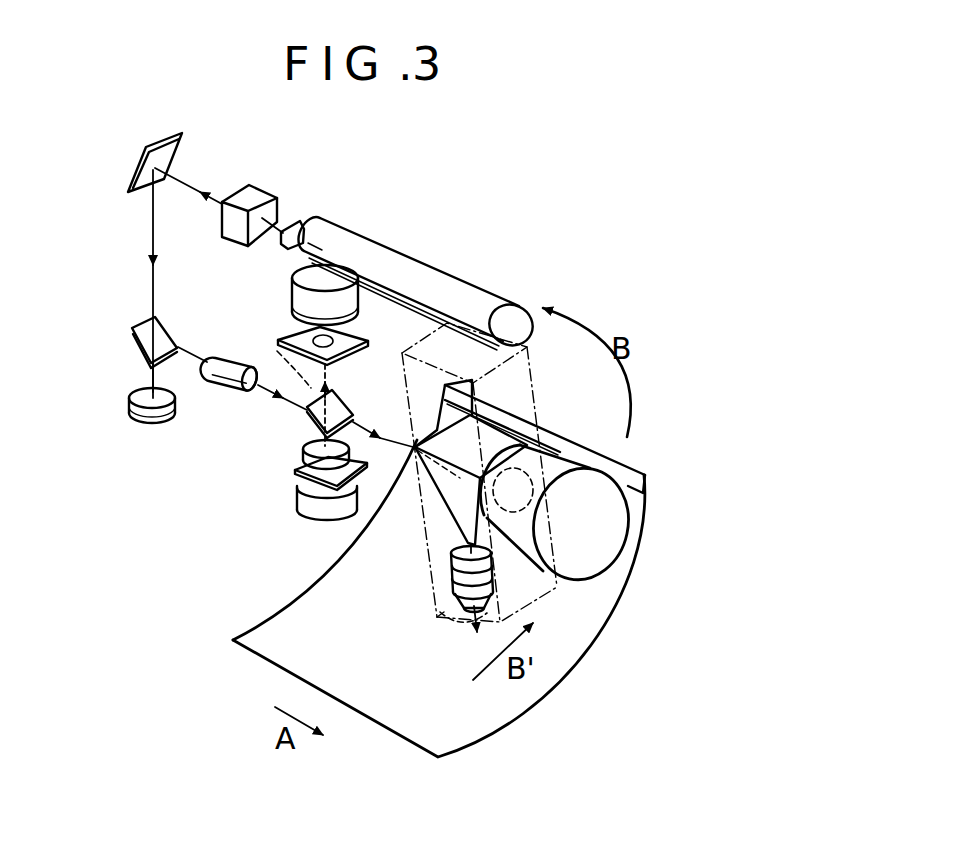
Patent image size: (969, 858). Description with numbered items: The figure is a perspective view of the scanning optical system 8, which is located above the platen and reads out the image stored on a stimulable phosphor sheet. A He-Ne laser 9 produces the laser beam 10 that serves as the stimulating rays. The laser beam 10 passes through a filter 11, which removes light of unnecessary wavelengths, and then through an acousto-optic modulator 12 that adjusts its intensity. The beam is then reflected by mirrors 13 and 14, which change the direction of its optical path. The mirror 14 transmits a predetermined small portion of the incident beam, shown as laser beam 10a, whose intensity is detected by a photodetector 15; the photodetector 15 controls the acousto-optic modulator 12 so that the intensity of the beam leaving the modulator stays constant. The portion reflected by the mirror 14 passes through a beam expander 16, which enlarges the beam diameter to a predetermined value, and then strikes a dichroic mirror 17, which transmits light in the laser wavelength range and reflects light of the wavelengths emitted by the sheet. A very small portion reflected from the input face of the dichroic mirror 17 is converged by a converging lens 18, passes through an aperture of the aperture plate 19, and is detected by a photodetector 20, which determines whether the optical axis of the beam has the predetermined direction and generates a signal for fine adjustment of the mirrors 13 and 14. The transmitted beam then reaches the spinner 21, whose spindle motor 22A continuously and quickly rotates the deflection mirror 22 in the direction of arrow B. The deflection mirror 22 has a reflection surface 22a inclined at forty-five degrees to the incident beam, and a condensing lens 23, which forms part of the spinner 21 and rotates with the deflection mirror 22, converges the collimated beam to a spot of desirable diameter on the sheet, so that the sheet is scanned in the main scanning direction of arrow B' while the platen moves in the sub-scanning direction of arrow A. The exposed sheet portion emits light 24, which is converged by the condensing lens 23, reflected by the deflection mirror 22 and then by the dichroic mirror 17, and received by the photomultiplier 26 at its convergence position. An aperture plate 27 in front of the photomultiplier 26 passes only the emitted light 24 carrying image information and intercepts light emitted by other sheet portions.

The scanning optical system 8 is at (563, 268).
The He-Ne laser 9 is at (455, 290).
The laser beam 10 is at (300, 220).
The laser beam 10a is at (148, 376).
The filter 11 is at (300, 228).
The acousto-optic modulator 12 is at (246, 197).
The mirror 13 is at (130, 187).
The mirror 14 is at (132, 345).
The photodetector 15 is at (160, 427).
The beam expander 16 is at (220, 357).
The dichroic mirror 17 is at (343, 404).
The converging lens 18 is at (307, 450).
The aperture plate 19 is at (300, 464).
The photodetector 20 is at (313, 507).
The spinner 21 is at (592, 403).
The deflection mirror 22 is at (490, 440).
The reflection surface 22a is at (428, 556).
The spindle motor 22A is at (612, 508).
The condensing lens 23 is at (447, 583).
The emitted light 24 is at (363, 496).
The photomultiplier 26 is at (308, 280).
The aperture plate 27 is at (290, 328).